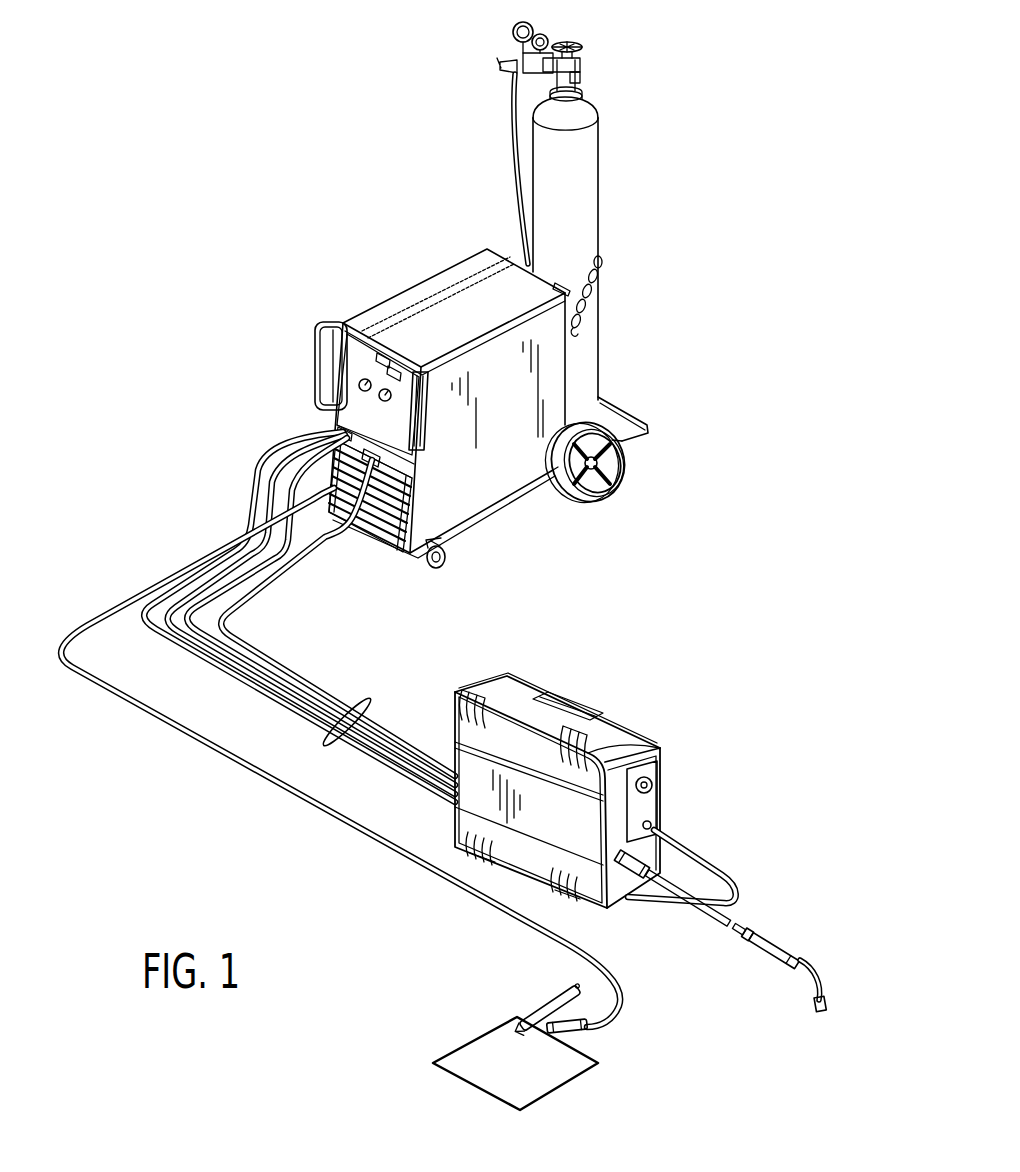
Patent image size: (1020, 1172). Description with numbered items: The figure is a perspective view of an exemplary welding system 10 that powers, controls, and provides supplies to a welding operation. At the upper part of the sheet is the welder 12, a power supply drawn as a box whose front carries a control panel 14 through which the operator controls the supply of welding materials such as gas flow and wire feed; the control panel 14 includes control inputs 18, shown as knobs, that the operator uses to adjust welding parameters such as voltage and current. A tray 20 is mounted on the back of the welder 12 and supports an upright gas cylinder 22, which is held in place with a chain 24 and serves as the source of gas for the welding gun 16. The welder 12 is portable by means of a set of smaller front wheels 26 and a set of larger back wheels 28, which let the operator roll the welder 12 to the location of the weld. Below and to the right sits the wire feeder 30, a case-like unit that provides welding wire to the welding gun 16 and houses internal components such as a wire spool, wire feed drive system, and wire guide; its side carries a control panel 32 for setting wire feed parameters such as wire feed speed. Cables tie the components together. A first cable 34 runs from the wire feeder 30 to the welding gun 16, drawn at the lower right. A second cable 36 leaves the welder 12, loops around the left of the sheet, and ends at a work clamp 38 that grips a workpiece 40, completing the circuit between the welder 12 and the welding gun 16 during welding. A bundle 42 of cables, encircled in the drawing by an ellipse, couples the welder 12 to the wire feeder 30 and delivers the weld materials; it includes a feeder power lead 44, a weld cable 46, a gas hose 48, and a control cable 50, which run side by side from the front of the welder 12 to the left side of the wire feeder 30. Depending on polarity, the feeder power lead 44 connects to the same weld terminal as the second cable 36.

The welding system 10 is at (278, 246).
The welder 12 is at (481, 274).
The control panel 14 is at (360, 357).
The welding gun 16 is at (770, 943).
The control inputs 18 is at (380, 400).
The tray 20 is at (633, 437).
The gas cylinder 22 is at (590, 180).
The chain 24 is at (602, 263).
The front wheels 26 is at (445, 567).
The back wheels 28 is at (593, 495).
The wire feeder 30 is at (556, 676).
The control panel 32 is at (653, 773).
The first cable 34 is at (680, 898).
The second cable 36 is at (90, 621).
The work clamp 38 is at (555, 996).
The workpiece 40 is at (535, 1073).
The bundle of cables 42 is at (362, 704).
The feeder power lead 44 is at (150, 598).
The weld cable 46 is at (208, 574).
The gas hose 48 is at (228, 580).
The control cable 50 is at (258, 648).